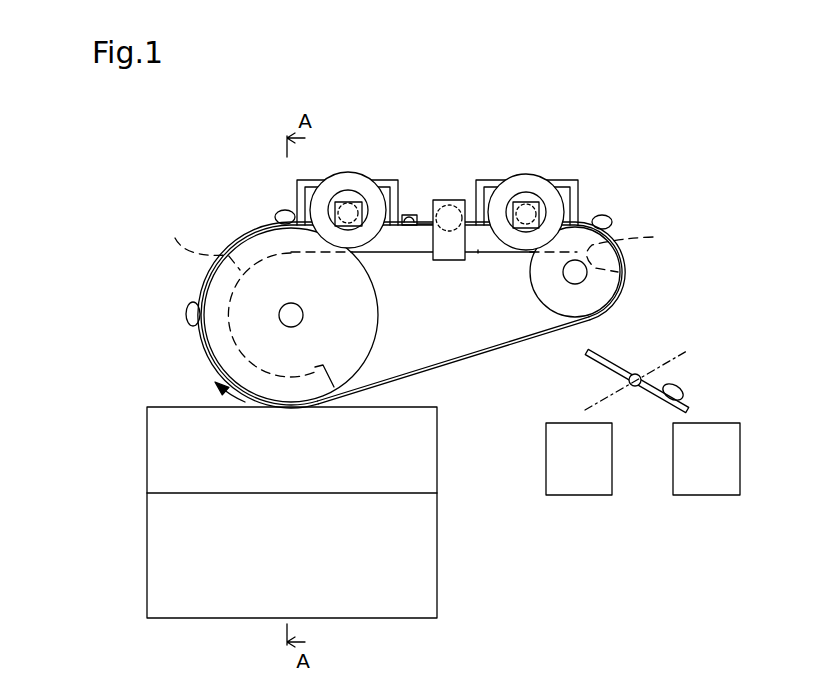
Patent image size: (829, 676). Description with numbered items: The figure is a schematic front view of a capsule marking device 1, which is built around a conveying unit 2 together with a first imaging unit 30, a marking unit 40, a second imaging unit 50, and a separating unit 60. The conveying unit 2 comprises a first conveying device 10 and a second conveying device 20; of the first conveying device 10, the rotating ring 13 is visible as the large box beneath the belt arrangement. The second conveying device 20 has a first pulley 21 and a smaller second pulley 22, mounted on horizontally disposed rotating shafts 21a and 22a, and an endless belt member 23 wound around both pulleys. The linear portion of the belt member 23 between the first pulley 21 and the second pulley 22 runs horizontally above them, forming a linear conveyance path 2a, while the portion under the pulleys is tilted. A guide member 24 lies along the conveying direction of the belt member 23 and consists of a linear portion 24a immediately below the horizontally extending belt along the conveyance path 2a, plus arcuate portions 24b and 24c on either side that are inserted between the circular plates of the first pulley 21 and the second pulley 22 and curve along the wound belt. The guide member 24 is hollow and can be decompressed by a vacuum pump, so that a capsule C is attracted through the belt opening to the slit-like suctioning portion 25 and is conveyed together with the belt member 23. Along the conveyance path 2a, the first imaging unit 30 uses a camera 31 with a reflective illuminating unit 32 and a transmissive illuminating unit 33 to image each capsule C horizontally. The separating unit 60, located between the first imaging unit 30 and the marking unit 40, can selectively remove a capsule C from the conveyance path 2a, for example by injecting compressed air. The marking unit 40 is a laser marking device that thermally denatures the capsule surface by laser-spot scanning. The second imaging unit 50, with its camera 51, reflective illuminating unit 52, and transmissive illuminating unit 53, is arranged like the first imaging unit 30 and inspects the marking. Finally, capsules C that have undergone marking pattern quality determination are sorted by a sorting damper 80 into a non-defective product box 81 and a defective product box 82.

The capsule marking device 1 is at (674, 186).
The conveying unit 2 is at (119, 258).
The conveyance path 2a is at (424, 222).
The first conveying device 10 is at (134, 424).
The rotating ring 13 is at (418, 458).
The second conveying device 20 is at (220, 213).
The first pulley 21 is at (362, 324).
The rotating shaft 21a is at (291, 315).
The second pulley 22 is at (551, 292).
The rotating shaft 22a is at (583, 279).
The belt member 23 is at (508, 347).
The guide member 24 is at (416, 259).
The linear portion 24a is at (478, 250).
The arcuate portion 24b is at (198, 240).
The arcuate portion 24c is at (644, 251).
The suctioning portion 25 is at (207, 350).
The first imaging unit 30 is at (311, 160).
The camera 31 is at (335, 213).
The reflective illuminating unit 32 is at (359, 176).
The transmissive illuminating unit 33 is at (298, 188).
The marking unit 40 is at (455, 200).
The second imaging unit 50 is at (561, 170).
The camera 51 is at (540, 215).
The reflective illuminating unit 52 is at (517, 173).
The transmissive illuminating unit 53 is at (578, 188).
The separating unit 60 is at (410, 215).
The sorting damper 80 is at (594, 353).
The non-defective product box 81 is at (697, 483).
The defective product box 82 is at (580, 483).
The capsule C is at (186, 314).